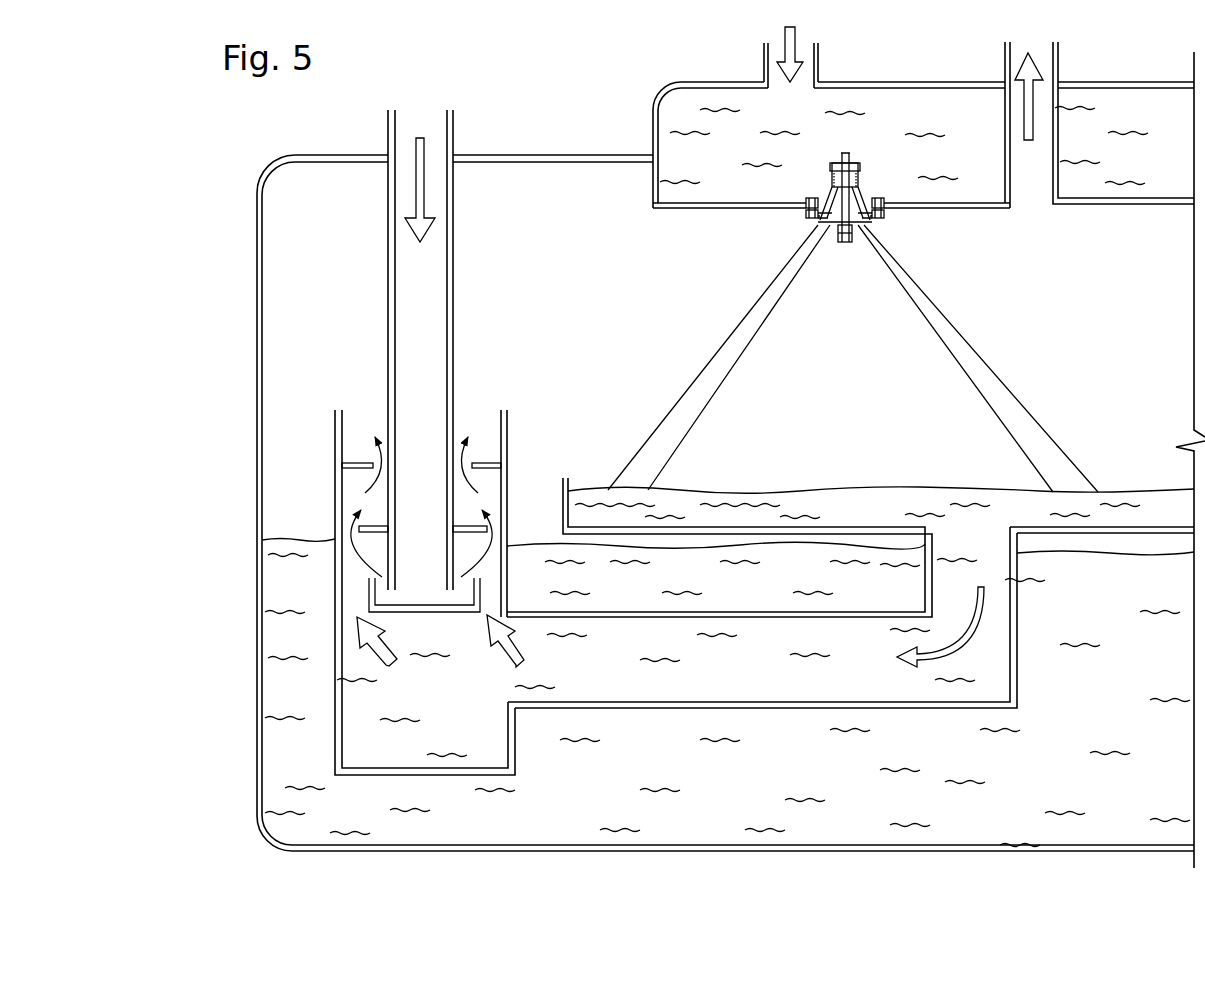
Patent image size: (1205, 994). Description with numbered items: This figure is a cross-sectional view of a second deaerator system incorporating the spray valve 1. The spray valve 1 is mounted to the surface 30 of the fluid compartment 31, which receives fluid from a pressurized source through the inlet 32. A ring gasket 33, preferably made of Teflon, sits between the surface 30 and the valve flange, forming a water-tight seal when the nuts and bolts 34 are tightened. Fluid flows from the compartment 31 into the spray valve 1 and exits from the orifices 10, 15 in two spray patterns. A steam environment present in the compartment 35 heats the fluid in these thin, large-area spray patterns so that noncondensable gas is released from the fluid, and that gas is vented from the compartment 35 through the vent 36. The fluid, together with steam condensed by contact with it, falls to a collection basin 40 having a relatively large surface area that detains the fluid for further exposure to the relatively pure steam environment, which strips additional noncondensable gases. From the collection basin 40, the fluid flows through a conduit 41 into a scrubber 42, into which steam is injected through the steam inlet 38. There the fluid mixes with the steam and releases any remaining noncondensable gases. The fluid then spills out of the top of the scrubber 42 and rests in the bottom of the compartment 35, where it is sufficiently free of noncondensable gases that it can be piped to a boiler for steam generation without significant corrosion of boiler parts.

The spray valve 1 is at (887, 216).
The first orifice 10 is at (830, 229).
The second orifice 15 is at (815, 225).
The surface 30 is at (999, 212).
The fluid compartment 31 is at (979, 111).
The inlet 32 is at (829, 70).
The ring gasket 33 is at (894, 214).
The nuts and bolts 34 is at (884, 227).
The compartment 35 is at (583, 186).
The vent 36 is at (1066, 67).
The steam inlet 38 is at (465, 112).
The collection basin 40 is at (554, 487).
The conduit 41 is at (999, 651).
The scrubber 42 is at (518, 404).